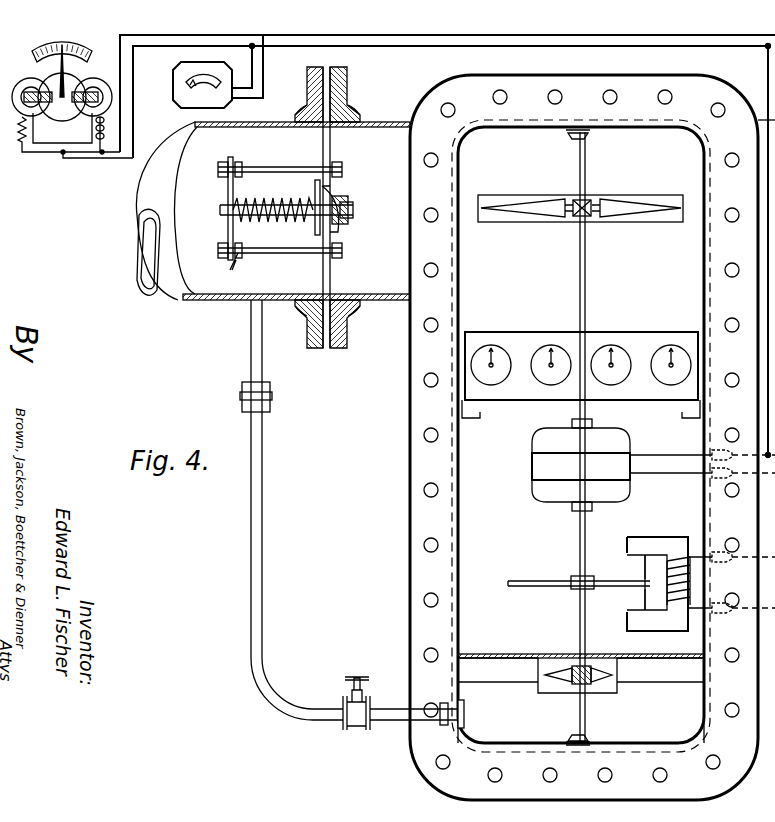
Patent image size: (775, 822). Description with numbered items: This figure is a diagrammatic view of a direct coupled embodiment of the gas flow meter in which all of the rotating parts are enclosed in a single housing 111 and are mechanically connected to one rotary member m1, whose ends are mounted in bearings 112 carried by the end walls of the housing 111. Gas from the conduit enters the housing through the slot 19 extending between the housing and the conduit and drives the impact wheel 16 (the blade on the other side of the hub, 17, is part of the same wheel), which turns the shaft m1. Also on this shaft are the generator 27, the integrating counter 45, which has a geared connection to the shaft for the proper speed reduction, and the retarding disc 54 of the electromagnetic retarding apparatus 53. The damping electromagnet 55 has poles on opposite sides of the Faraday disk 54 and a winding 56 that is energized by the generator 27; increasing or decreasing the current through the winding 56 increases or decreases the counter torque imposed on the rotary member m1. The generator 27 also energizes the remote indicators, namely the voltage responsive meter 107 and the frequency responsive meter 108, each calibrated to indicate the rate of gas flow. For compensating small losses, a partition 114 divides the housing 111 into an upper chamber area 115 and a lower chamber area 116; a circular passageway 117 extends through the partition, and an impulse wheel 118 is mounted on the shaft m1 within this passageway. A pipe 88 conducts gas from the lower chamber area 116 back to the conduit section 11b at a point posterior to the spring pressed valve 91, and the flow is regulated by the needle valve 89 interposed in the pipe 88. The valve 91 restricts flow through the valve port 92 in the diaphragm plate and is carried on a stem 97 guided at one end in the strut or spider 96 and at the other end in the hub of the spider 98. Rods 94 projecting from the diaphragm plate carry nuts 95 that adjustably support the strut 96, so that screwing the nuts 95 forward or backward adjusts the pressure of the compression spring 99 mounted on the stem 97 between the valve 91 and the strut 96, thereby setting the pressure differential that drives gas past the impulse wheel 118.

The frequency responsive meter 108 is at (59, 139).
The voltage responsive meter 107 is at (180, 92).
The conduit section 11b is at (198, 300).
The rods 94 is at (256, 168).
The spring pressed valve 91 is at (314, 196).
The valve port 92 is at (334, 200).
The stem 97 is at (278, 197).
The strut or spider 96 is at (228, 236).
The compression spring 99 is at (298, 218).
The spider 98 is at (338, 230).
The nuts 95 is at (233, 262).
The pipe 88 is at (250, 637).
The needle valve 89 is at (357, 726).
The housing 111 is at (453, 462).
The upper chamber area 115 is at (472, 562).
The lower chamber area 116 is at (487, 735).
The bearings 112 is at (572, 132).
The rotary member or shaft m1 is at (580, 278).
The slot 19 is at (500, 222).
The impact wheel 16 is at (572, 200).
The fan blade 17 is at (618, 208).
The integrating counter 45 is at (525, 400).
The generator or alternator 27 is at (548, 488).
The electromagnetic retarding apparatus 53 is at (617, 565).
The Faraday disk 54 is at (520, 584).
The damping electromagnet 55 is at (645, 631).
The winding 56 is at (682, 605).
The partition 114 is at (520, 656).
The circular passageway 117 is at (548, 690).
The vane or impulse wheel 118 is at (605, 682).